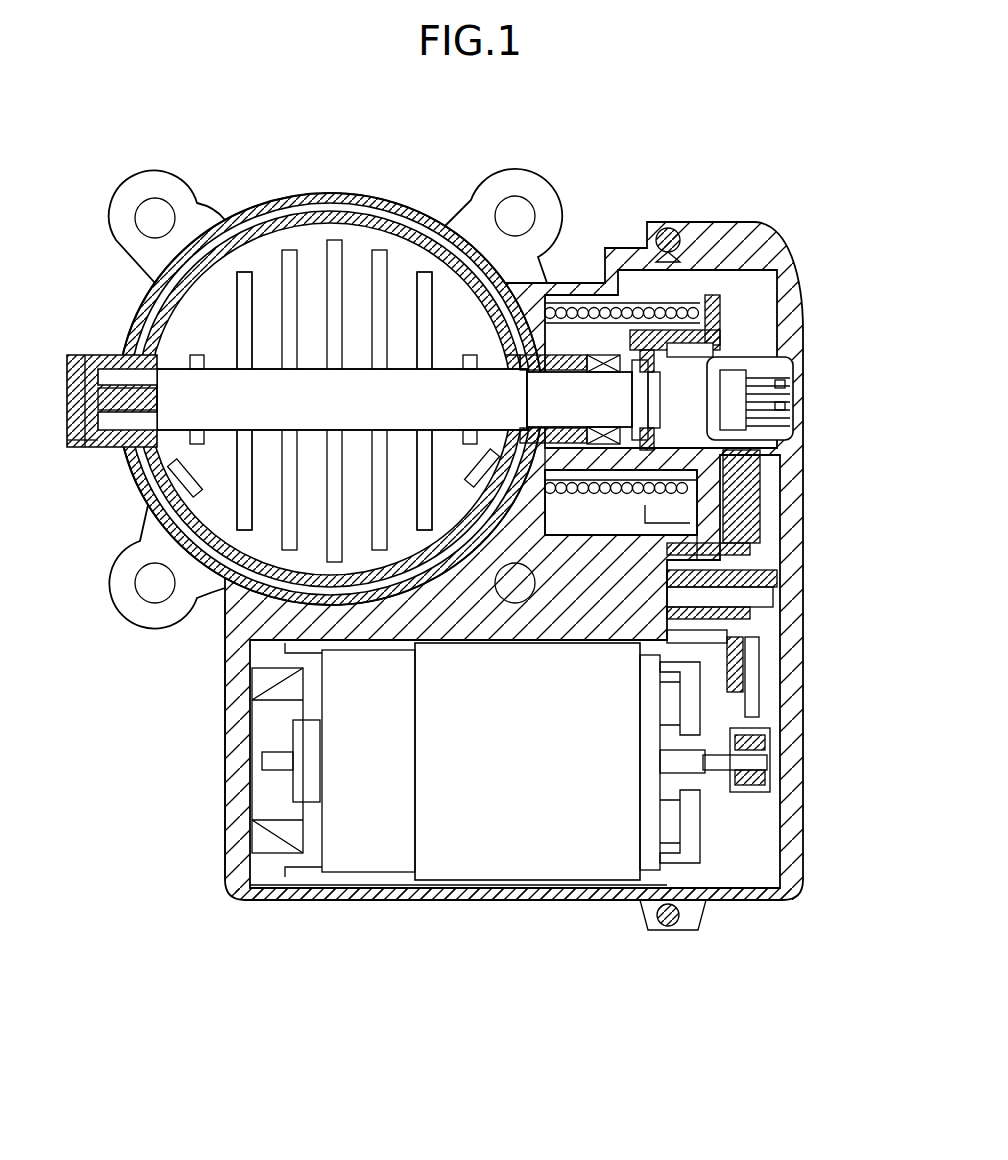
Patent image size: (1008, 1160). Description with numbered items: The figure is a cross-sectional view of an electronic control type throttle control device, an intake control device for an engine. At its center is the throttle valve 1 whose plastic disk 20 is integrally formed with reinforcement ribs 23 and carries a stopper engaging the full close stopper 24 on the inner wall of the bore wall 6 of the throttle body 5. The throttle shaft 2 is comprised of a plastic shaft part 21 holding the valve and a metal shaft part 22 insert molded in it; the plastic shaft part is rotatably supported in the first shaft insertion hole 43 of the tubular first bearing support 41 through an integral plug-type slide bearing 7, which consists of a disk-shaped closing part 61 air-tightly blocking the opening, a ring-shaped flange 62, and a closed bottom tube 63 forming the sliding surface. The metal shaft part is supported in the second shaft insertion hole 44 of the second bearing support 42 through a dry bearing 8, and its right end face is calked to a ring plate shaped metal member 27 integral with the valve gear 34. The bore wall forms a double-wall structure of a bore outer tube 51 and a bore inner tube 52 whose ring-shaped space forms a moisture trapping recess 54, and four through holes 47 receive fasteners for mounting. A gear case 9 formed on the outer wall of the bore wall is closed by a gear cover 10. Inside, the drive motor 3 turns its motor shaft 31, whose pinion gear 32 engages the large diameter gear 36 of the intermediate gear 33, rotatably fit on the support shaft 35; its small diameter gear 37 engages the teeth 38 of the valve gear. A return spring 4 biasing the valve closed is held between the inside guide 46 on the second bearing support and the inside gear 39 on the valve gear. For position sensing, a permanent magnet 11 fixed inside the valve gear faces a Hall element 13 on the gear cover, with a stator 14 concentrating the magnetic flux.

The throttle valve 1 is at (334, 344).
The plastic disk 20 is at (310, 250).
The throttle shaft 2 is at (299, 346).
The plastic shaft part 21 is at (342, 399).
The drive motor 3 is at (536, 862).
The return spring 4 is at (577, 312).
The throttle body 5 is at (228, 194).
The bore wall 6 is at (330, 353).
The integral plug-type slide bearing 7 is at (160, 372).
The dry bearing 8 is at (512, 368).
The gear case 9 is at (383, 897).
The gear cover 10 is at (762, 902).
The permanent magnet 11 is at (705, 350).
The Hall element 13 is at (782, 397).
The stator 14 is at (748, 380).
The metal shaft part 22 is at (566, 412).
The reinforcement ribs 23 is at (245, 282).
The full close stopper 24 is at (480, 602).
The ring plate shaped metal member 27 is at (718, 333).
The motor shaft 31 is at (759, 780).
The pinion gear 32 is at (760, 798).
The intermediate gear 33 is at (742, 690).
The valve gear 34 is at (718, 300).
The support shaft 35 is at (778, 585).
The large diameter gear 36 is at (758, 735).
The small diameter gear 37 is at (775, 640).
The teeth 38 is at (752, 545).
The inside gear 39 is at (760, 485).
The first bearing support 41 is at (142, 414).
The second bearing support 42 is at (572, 462).
The first shaft insertion hole 43 is at (138, 405).
The second shaft insertion hole 44 is at (530, 410).
The inside guide 46 is at (598, 470).
The through holes 47 is at (155, 215).
The bore outer tube 51 is at (470, 248).
The bore inner tube 52 is at (425, 265).
The recess 54 is at (370, 595).
The closing part 61 is at (72, 355).
The flange 62 is at (75, 447).
The closed bottom tube 63 is at (153, 377).